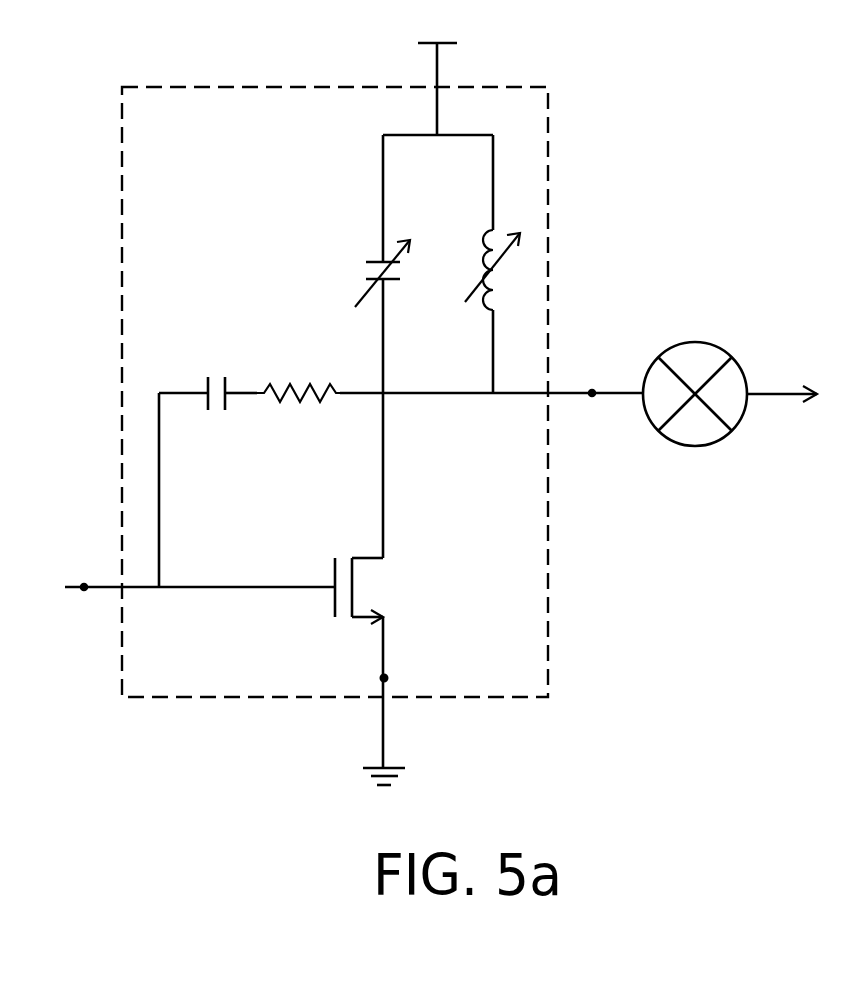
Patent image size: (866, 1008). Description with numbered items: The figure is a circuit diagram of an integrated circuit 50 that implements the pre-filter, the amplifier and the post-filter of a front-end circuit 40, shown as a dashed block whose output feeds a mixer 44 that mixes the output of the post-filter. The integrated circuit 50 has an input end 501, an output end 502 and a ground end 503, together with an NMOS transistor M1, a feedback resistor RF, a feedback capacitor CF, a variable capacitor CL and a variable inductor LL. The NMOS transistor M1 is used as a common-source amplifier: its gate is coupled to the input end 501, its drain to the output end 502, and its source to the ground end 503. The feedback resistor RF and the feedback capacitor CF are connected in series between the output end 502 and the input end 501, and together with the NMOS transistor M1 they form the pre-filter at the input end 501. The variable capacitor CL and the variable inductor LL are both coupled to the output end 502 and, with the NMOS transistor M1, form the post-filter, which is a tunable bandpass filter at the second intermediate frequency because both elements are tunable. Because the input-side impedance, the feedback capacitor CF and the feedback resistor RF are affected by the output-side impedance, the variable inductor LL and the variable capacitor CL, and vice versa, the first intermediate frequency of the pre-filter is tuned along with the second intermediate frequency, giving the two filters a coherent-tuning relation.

The front-end circuit 40 is at (812, 738).
The mixer 44 is at (717, 343).
The integrated circuit 50 is at (550, 568).
The input end 501 is at (193, 612).
The output end 502 is at (596, 419).
The ground end 503 is at (358, 730).
The variable capacitor CL is at (360, 264).
The variable inductor LL is at (476, 264).
The feedback capacitor CF is at (208, 419).
The feedback resistor RF is at (298, 423).
The NMOS transistor M1 is at (382, 535).